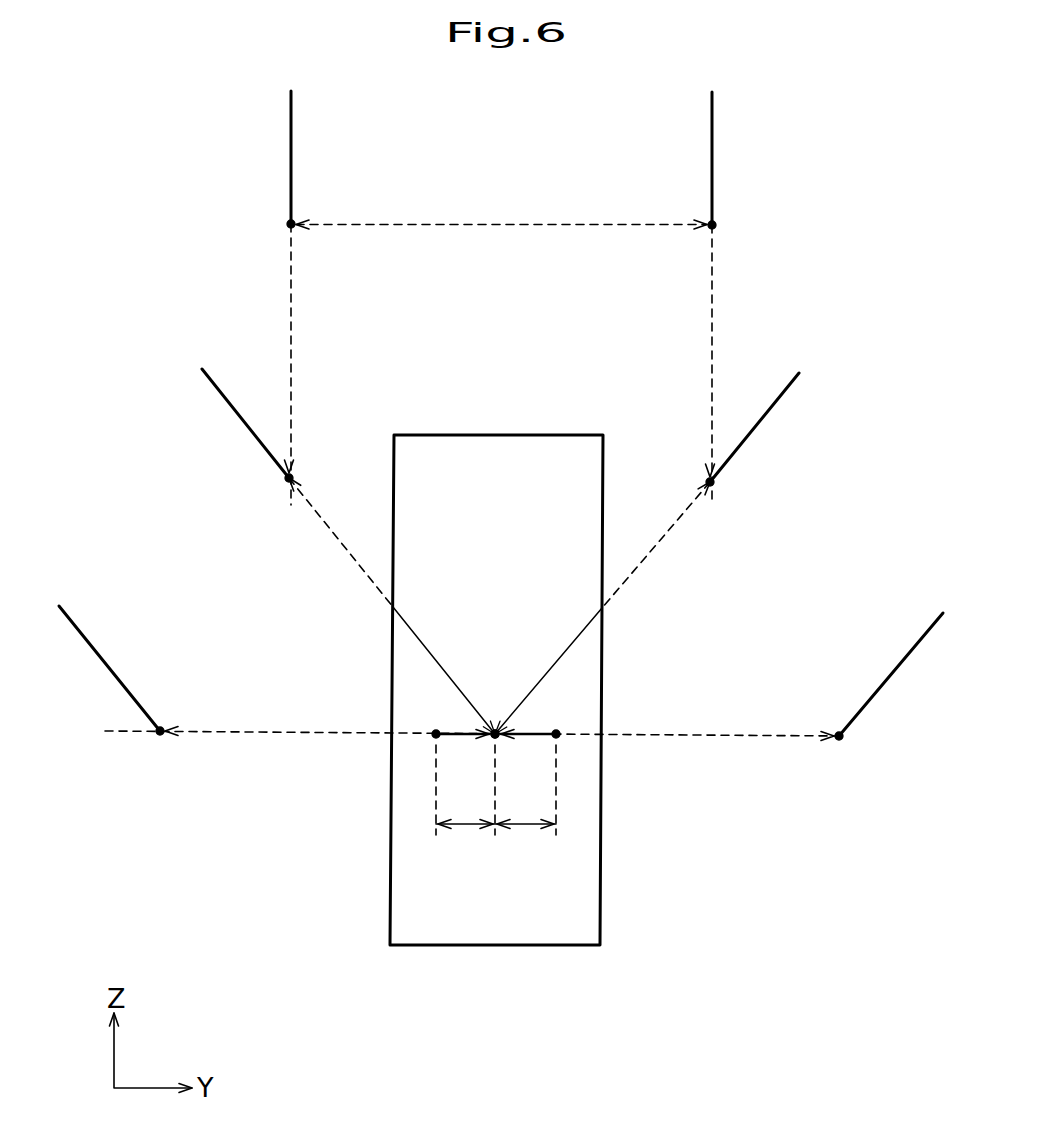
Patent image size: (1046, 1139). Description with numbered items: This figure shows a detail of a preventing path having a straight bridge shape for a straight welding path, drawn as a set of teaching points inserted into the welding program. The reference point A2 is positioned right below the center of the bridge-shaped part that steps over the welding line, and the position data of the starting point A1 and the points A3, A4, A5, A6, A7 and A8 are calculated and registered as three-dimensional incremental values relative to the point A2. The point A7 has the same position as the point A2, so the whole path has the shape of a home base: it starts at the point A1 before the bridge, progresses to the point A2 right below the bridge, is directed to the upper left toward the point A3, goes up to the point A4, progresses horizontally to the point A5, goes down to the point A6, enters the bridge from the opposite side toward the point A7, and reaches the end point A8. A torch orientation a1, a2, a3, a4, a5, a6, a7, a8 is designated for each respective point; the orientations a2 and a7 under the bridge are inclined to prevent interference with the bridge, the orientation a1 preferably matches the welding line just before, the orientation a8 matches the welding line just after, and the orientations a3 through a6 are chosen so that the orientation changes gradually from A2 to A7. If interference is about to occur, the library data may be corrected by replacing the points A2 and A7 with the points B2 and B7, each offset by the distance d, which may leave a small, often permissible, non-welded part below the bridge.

The torch orientation at point A1 a1 is at (85, 633).
The torch orientation at point A2 a2 is at (452, 678).
The torch orientation at point A3 a3 is at (215, 386).
The torch orientation at point A4 a4 is at (291, 133).
The torch orientation at point A5 a5 is at (712, 133).
The torch orientation at point A6 a6 is at (782, 398).
The torch orientation at point A7 a7 is at (565, 648).
The torch orientation at point A8 a8 is at (927, 627).
The starting point of the preventing path A1 is at (158, 747).
The reference point A2 is at (525, 749).
The teaching point A3 is at (266, 477).
The teaching point A4 is at (270, 222).
The teaching point A5 is at (732, 222).
The teaching point A6 is at (731, 482).
The teaching point A7 is at (495, 734).
The end point of the preventing path A8 is at (838, 752).
The corrected point replacing A2 B2 is at (436, 740).
The corrected point replacing A7 B7 is at (556, 730).
The offset distance d is at (496, 838).